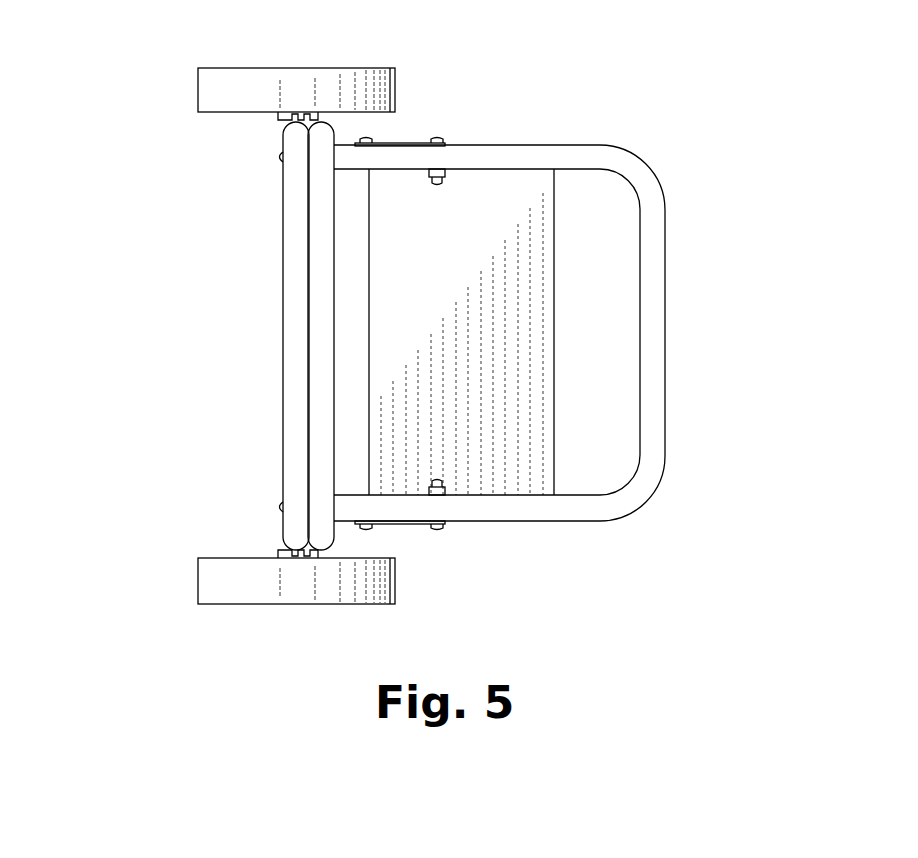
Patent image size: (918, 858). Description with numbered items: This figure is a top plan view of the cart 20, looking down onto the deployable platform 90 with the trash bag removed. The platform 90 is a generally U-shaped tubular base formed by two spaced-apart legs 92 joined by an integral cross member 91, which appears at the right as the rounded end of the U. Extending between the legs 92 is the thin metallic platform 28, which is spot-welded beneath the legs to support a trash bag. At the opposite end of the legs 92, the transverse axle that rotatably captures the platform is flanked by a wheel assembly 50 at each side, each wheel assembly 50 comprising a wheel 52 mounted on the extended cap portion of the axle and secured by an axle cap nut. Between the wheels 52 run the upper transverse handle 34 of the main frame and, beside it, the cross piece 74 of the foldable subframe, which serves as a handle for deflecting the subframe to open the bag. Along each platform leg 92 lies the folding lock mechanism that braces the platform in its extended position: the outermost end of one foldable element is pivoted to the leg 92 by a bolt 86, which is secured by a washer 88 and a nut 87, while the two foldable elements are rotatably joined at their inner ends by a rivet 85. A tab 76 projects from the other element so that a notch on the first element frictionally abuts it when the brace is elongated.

The cart 20 is at (690, 78).
The platform 28 is at (470, 278).
The handle 34 is at (292, 298).
The wheel assembly 50 is at (198, 130).
The wheels 52 is at (225, 88).
The cross piece 74 is at (320, 382).
The tab 76 is at (372, 143).
The rivet 85 is at (382, 143).
The bolt 86 is at (437, 143).
The nut 87 is at (432, 186).
The washer 88 is at (440, 186).
The platform 90 is at (676, 327).
The cross member 91 is at (652, 400).
The legs 92 is at (540, 146).